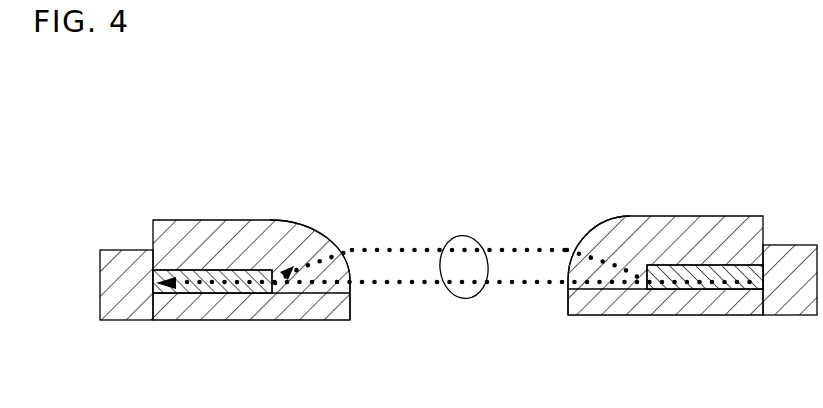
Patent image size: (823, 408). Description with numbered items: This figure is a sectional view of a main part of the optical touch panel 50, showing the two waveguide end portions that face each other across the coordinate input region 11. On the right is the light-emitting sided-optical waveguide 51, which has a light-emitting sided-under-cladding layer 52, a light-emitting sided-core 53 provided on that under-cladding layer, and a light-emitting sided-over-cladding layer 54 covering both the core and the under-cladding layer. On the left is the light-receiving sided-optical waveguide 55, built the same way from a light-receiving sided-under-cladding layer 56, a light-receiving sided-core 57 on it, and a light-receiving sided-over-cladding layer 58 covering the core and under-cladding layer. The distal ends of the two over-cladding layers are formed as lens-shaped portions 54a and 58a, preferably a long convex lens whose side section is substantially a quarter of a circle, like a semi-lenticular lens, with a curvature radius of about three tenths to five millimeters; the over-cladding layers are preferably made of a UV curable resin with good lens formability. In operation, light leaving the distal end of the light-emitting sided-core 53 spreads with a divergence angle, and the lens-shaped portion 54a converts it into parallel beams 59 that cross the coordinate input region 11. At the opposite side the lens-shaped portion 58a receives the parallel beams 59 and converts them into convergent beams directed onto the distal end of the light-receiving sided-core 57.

The optical touch panel 50 is at (477, 57).
The coordinate input region 11 is at (328, 210).
The light-emitting sided-optical waveguide 51 is at (567, 323).
The light-emitting sided-under-cladding layer 52 is at (567, 315).
The light-emitting sided-core 53 is at (688, 268).
The light-emitting sided-over-cladding layer 54 is at (723, 233).
The lens-shaped distal end portion of the light-emitting sided-over-cladding layer 54a is at (612, 218).
The light-receiving sided-optical waveguide 55 is at (153, 330).
The light-receiving sided-under-cladding layer 56 is at (350, 307).
The light-receiving sided-core 57 is at (212, 273).
The light-receiving sided-over-cladding layer 58 is at (260, 225).
The lens-shaped distal end portion of the light-receiving sided-over-cladding layer 58a is at (299, 218).
The parallel beams 59 is at (470, 298).